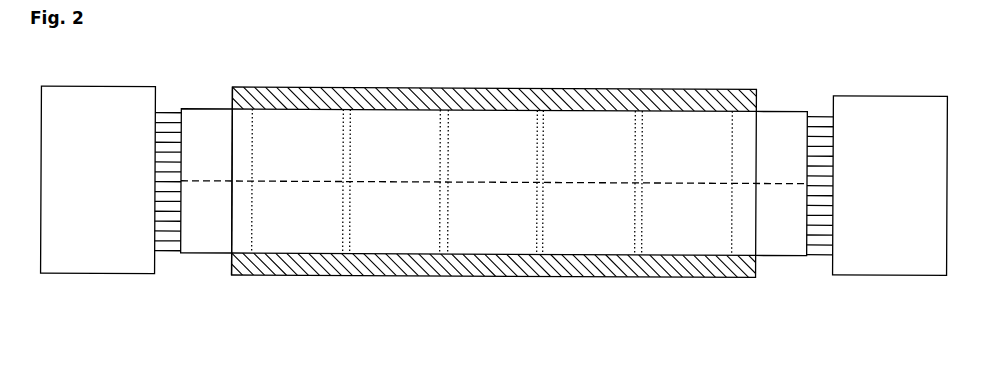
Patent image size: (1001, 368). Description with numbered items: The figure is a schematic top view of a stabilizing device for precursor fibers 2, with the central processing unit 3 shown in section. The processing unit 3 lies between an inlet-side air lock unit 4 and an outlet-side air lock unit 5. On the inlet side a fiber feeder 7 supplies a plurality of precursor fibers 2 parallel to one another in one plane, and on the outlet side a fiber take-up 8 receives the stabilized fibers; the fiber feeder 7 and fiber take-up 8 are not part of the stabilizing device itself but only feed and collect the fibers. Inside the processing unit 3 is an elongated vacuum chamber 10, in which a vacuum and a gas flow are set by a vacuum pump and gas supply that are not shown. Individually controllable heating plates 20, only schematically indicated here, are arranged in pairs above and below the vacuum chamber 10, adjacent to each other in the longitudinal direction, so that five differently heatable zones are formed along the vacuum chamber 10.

The precursor fibers 2 is at (830, 116).
The processing unit 3 is at (706, 280).
The inlet-side air lock unit 4 is at (199, 257).
The outlet-side air lock unit 5 is at (774, 258).
The fiber feeder 7 is at (101, 281).
The fiber take-up 8 is at (898, 278).
The vacuum chamber 10 is at (244, 258).
The heating plates 20 is at (500, 244).